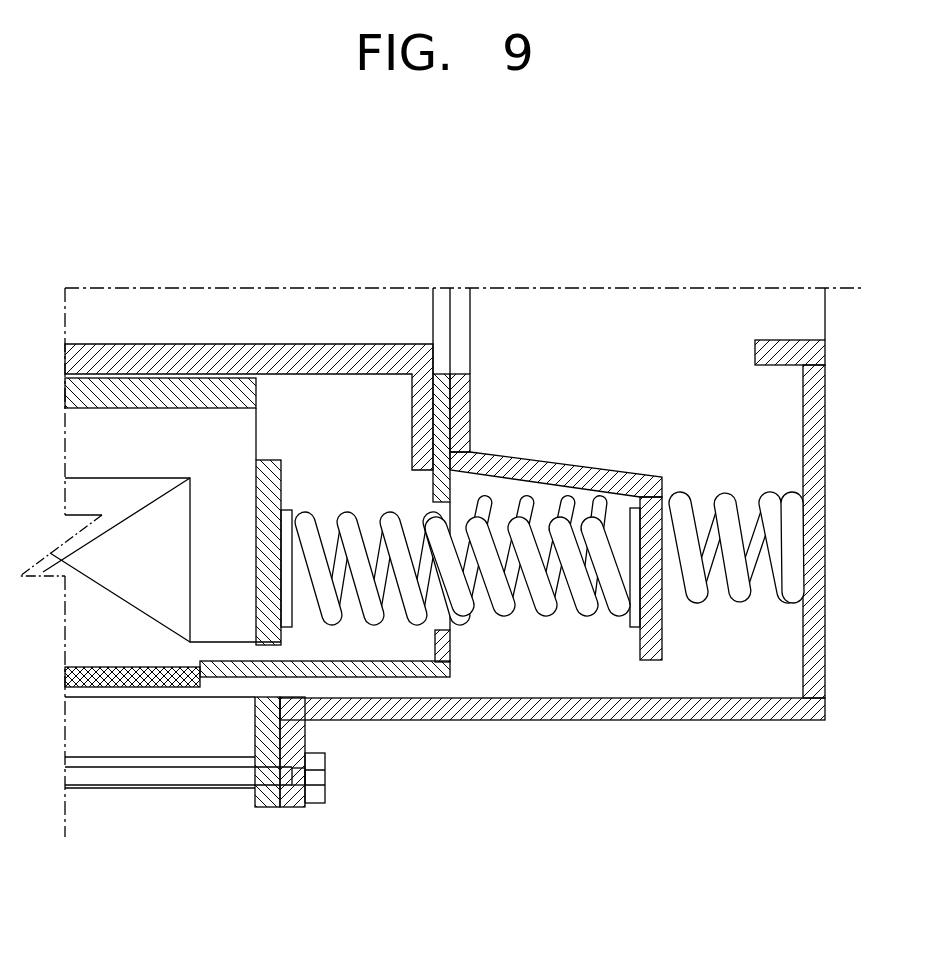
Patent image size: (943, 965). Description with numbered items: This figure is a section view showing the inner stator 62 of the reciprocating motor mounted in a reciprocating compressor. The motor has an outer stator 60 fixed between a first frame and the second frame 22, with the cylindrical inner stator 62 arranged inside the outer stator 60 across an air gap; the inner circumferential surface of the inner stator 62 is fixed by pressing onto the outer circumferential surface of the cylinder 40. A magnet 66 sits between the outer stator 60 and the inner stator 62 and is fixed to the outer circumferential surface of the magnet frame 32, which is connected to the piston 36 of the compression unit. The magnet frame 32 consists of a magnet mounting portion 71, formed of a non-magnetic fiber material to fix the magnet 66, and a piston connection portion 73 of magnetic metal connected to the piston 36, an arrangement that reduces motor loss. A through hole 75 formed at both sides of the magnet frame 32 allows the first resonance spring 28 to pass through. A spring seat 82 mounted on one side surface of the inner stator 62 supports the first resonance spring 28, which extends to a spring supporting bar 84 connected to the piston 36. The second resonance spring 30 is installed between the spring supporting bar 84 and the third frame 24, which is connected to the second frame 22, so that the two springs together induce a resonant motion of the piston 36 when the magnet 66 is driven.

The second frame 22 is at (263, 807).
The third frame 24 is at (537, 718).
The first resonance spring 28 is at (585, 617).
The second resonance spring 30 is at (700, 597).
The magnet frame 32 is at (325, 747).
The piston 36 is at (383, 350).
The cylinder 40 is at (157, 390).
The outer stator 60 is at (197, 747).
The inner stator 62 is at (219, 420).
The magnet 66 is at (133, 687).
The magnet mounting portion 71 is at (375, 668).
The piston connection portion 73 is at (422, 663).
The through hole 75 is at (448, 620).
The spring seat 82 is at (266, 470).
The spring supporting bar 84 is at (650, 650).